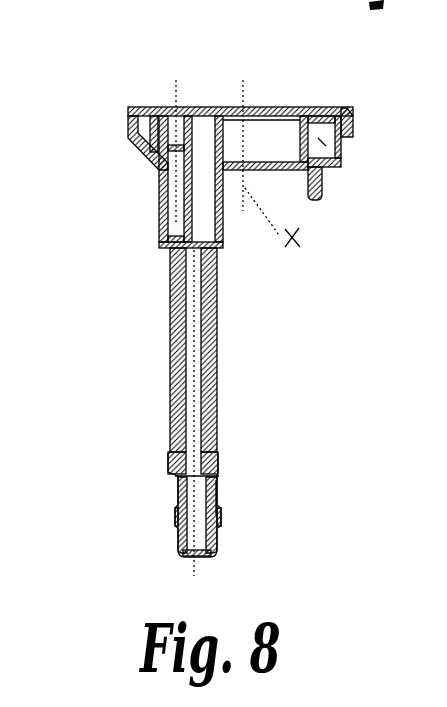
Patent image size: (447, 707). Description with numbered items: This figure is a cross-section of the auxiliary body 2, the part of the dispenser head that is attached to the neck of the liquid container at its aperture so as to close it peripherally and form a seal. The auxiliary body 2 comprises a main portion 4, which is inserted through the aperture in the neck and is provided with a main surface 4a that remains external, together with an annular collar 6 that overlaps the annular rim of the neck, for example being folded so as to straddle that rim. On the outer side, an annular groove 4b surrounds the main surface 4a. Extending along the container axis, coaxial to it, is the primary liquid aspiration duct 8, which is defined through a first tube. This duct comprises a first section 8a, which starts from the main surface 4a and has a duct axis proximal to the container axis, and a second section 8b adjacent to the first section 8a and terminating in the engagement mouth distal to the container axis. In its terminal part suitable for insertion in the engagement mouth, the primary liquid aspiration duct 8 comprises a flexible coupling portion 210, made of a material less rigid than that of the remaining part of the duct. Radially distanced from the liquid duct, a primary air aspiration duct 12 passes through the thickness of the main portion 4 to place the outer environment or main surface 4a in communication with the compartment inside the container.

The auxiliary body 2 is at (218, 288).
The main portion 4 is at (115, 162).
The main surface 4a is at (208, 105).
The annular groove 4b is at (341, 148).
The annular collar 6 is at (354, 125).
The primary liquid aspiration duct 8 is at (200, 338).
The first section 8a is at (159, 186).
The second section 8b is at (181, 412).
The primary air aspiration duct 12 is at (172, 220).
The flexible coupling portion 210 is at (218, 497).